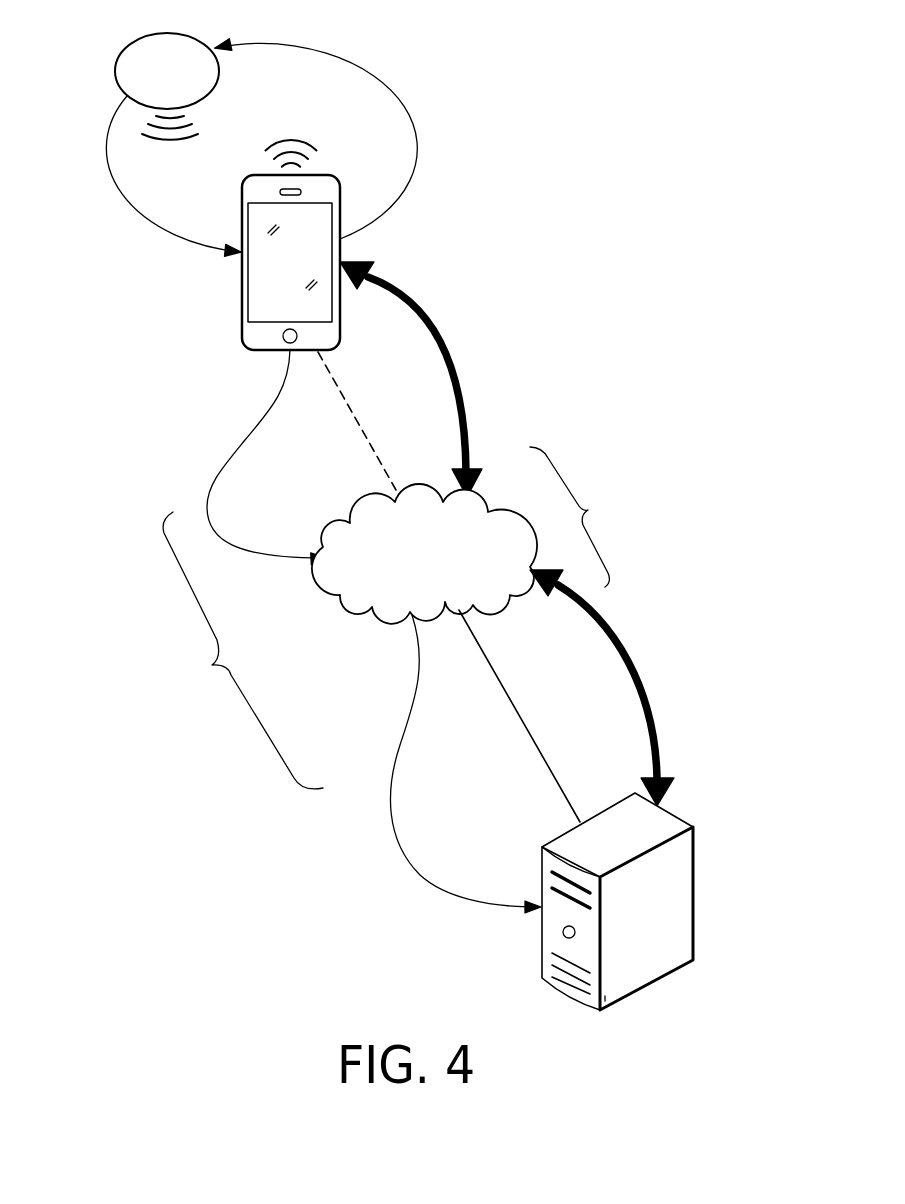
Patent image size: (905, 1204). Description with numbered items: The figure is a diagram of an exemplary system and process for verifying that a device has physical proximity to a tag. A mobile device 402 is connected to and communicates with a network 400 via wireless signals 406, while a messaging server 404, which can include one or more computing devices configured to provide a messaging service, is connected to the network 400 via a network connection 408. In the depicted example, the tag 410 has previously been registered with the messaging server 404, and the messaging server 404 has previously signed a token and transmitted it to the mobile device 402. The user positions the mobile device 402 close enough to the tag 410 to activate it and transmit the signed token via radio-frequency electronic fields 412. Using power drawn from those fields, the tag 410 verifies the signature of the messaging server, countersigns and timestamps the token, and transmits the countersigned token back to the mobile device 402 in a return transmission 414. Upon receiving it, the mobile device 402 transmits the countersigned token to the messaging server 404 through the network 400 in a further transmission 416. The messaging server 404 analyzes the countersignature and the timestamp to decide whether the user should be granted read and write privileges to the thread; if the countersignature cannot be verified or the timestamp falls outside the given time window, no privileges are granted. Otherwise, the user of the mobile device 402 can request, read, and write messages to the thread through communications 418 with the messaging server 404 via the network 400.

The network 400 is at (370, 607).
The mobile device 402 is at (242, 307).
The messaging server 404 is at (697, 888).
The wireless signals 406 is at (358, 422).
The network connection 408 is at (530, 741).
The tag 410 is at (135, 43).
The radio-frequency electronic fields 412 is at (420, 152).
The transmission of countersigned token to mobile device 414 is at (112, 182).
The transmission of countersigned token to messaging server 416 is at (212, 665).
The communications with messaging server 418 is at (588, 510).